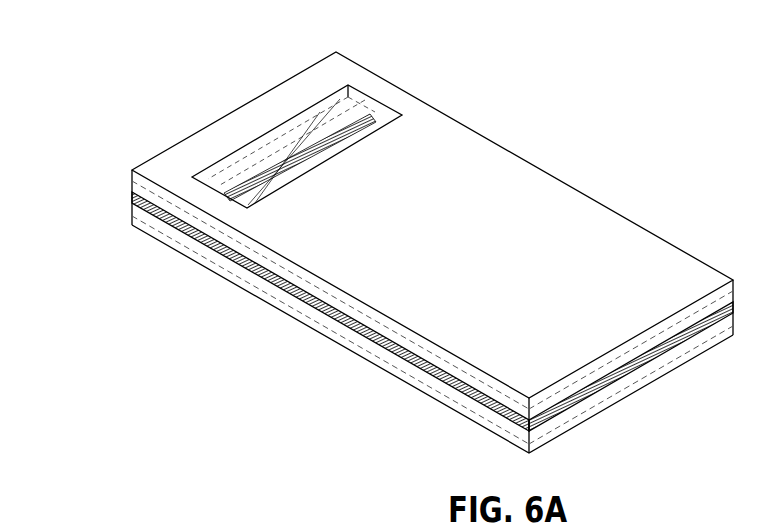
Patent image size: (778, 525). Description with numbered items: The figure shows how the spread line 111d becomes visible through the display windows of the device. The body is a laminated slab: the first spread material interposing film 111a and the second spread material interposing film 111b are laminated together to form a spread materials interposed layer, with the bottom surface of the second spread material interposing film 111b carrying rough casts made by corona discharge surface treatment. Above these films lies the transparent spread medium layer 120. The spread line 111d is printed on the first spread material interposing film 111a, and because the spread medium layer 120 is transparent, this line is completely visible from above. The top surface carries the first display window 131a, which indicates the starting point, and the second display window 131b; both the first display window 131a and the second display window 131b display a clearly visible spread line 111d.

The spread medium layer 120 is at (131, 197).
The first spread material interposing film 111a is at (131, 212).
The second spread material interposing film 111b is at (132, 225).
The second display window 131b is at (362, 92).
The spread line 111d is at (377, 108).
The first display window 131a is at (590, 277).